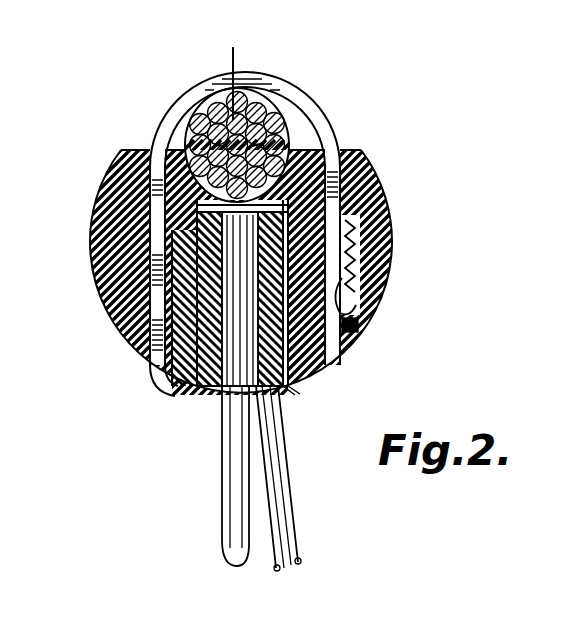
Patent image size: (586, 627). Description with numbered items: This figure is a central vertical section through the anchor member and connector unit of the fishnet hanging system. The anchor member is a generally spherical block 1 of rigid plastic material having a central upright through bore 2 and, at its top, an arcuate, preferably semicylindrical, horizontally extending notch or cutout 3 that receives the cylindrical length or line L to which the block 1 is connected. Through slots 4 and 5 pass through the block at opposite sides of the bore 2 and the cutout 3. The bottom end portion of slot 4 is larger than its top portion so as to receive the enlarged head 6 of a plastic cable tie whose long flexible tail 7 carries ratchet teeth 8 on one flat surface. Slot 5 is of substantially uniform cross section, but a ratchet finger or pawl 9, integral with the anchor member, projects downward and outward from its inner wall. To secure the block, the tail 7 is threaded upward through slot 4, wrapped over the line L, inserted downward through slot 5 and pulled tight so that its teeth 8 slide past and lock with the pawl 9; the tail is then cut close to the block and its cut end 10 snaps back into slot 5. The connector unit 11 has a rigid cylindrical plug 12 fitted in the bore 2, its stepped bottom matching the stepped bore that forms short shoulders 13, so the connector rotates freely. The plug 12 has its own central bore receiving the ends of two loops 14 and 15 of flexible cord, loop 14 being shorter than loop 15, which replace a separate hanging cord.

The anchor block 1 is at (377, 190).
The central upright through bore 2 is at (150, 243).
The notch or cutout 3 is at (300, 135).
The through slot 4 is at (185, 362).
The through slot 5 is at (323, 353).
The enlarged head 6 is at (158, 338).
The tail 7 is at (333, 157).
The ratchet teeth 8 is at (365, 312).
The ratchet finger or pawl 9 is at (385, 222).
The cut end 10 is at (350, 353).
The connector unit 11 is at (215, 394).
The plug 12 is at (298, 383).
The shoulders 13 is at (190, 385).
The loop 14 is at (228, 520).
The loop 15 is at (278, 530).
The line L is at (237, 67).